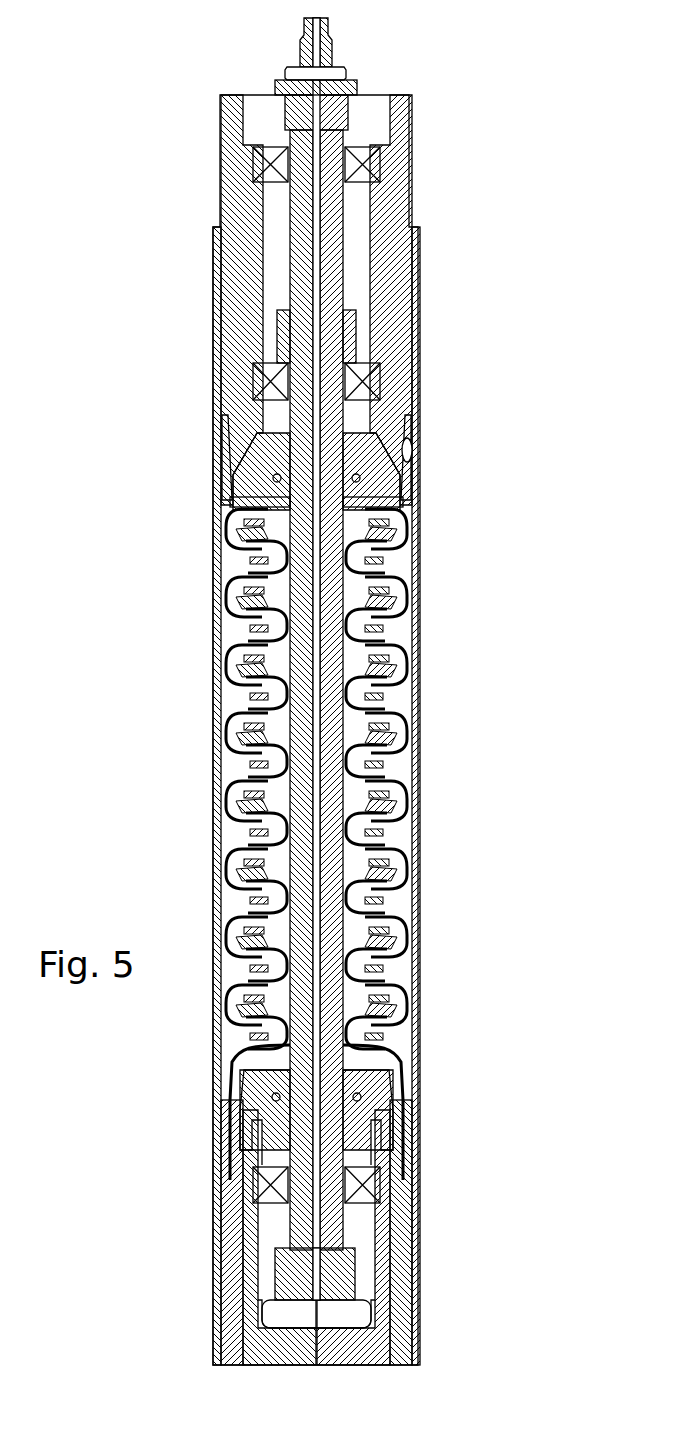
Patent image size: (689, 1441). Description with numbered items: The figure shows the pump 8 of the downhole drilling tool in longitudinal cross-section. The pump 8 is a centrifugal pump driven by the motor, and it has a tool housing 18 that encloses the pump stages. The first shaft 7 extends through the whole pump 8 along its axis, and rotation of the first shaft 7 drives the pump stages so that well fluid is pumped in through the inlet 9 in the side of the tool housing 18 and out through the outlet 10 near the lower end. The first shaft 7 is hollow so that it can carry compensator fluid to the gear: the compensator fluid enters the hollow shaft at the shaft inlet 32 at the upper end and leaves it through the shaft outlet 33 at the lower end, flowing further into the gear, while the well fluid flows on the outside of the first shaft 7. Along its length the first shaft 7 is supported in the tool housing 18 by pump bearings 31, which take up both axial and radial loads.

The pump 8 is at (510, 98).
The shaft inlet 32 is at (330, 58).
The pump bearings 31 is at (372, 165).
The inlet 9 is at (410, 452).
The tool housing 18 is at (413, 668).
The first shaft 7 is at (410, 978).
The shaft outlet 33 is at (315, 1230).
The outlet 10 is at (388, 1253).